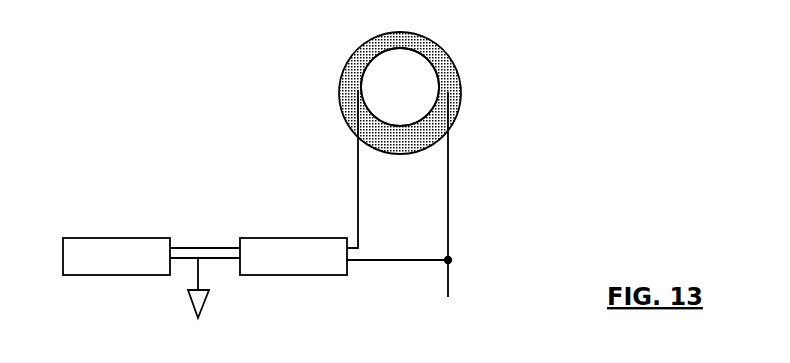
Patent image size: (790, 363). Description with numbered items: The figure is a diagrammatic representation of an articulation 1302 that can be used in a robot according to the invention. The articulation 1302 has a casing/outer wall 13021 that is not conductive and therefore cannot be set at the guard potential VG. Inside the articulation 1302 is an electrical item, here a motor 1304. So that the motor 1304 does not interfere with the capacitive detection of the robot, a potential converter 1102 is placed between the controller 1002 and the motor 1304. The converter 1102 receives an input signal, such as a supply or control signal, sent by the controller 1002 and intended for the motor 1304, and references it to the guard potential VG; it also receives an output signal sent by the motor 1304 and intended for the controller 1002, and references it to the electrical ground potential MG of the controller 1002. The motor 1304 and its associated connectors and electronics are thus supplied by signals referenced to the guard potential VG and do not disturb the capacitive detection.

The controller 1002 is at (116, 256).
The converter 1102 is at (293, 256).
The articulation 1302 is at (463, 89).
The casing/outer wall 13021 is at (345, 117).
The motor 1304 is at (400, 87).
The electrical ground potential MG is at (188, 303).
The guard potential VG is at (404, 210).